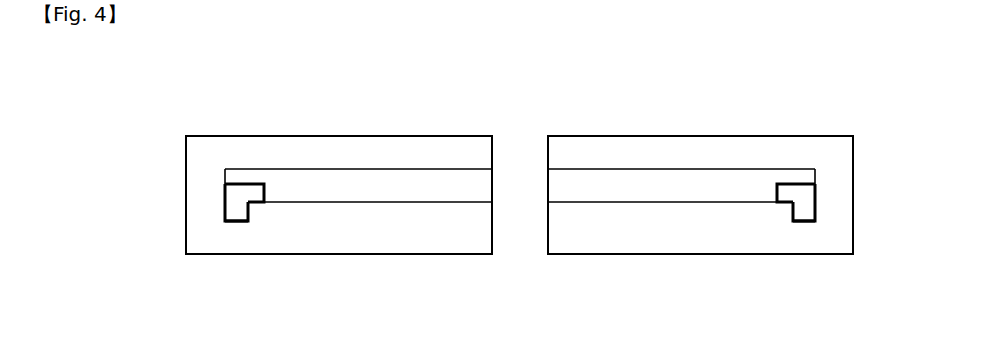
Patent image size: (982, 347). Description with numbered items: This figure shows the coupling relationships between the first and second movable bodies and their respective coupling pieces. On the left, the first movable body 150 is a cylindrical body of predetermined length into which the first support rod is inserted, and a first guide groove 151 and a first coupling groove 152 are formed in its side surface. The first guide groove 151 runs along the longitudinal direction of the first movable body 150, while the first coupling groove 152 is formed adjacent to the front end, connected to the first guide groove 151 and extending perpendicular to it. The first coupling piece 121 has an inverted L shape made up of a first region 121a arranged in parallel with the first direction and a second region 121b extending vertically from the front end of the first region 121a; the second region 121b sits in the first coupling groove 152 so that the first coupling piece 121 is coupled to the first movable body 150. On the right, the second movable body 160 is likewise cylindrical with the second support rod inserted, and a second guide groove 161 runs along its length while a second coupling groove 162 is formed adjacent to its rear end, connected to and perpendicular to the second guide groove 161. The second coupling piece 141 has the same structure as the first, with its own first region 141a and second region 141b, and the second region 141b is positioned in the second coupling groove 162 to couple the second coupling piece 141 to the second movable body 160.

The first coupling piece 121 is at (204, 146).
The first region 121a is at (252, 192).
The second region 121b is at (232, 208).
The first movable body 150 is at (357, 136).
The first guide groove 151 is at (425, 169).
The first coupling groove 152 is at (234, 221).
The second coupling piece 141 is at (839, 146).
The first region 141a is at (789, 190).
The second region 141b is at (810, 206).
The second movable body 160 is at (682, 136).
The second guide groove 161 is at (612, 169).
The second coupling groove 162 is at (804, 221).